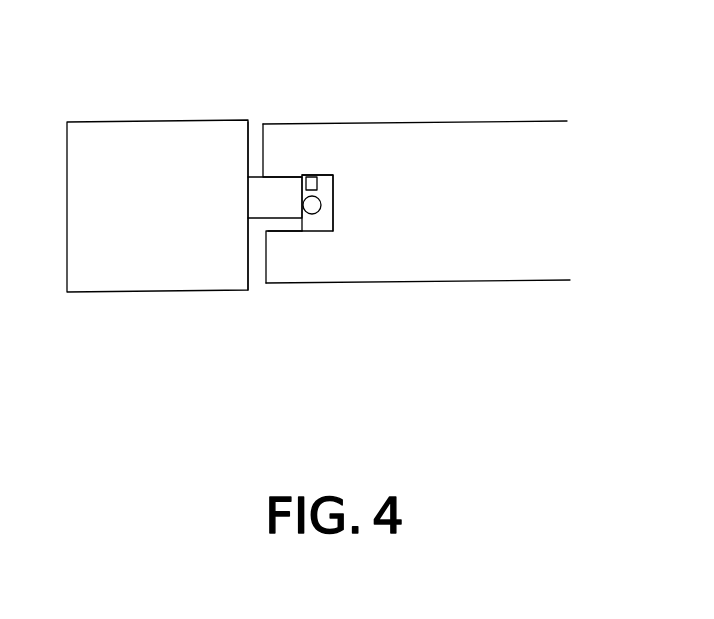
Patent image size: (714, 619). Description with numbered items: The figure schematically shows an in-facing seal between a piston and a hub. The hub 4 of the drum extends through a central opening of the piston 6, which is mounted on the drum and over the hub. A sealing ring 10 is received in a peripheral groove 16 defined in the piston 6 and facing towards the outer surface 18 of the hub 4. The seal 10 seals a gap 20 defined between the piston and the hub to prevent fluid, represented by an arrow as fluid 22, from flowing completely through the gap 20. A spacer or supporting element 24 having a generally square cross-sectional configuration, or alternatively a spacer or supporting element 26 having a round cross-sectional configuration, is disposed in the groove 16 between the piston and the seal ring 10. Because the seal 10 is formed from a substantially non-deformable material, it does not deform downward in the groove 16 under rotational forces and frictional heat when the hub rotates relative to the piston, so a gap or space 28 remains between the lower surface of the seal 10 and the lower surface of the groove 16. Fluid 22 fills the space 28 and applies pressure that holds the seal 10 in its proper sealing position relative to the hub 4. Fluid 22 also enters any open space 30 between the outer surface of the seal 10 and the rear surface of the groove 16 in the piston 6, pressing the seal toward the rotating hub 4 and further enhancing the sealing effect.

The hub 4 is at (129, 121).
The piston 6 is at (417, 122).
The sealing ring 10 is at (260, 203).
The peripheral groove 16 is at (334, 222).
The outer surface 18 is at (247, 146).
The gap 20 is at (253, 131).
The fluid 22 is at (268, 298).
The spacer or supporting element 24 is at (313, 177).
The spacer or supporting element 26 is at (316, 213).
The gap or space 28 is at (280, 223).
The open space 30 is at (327, 194).